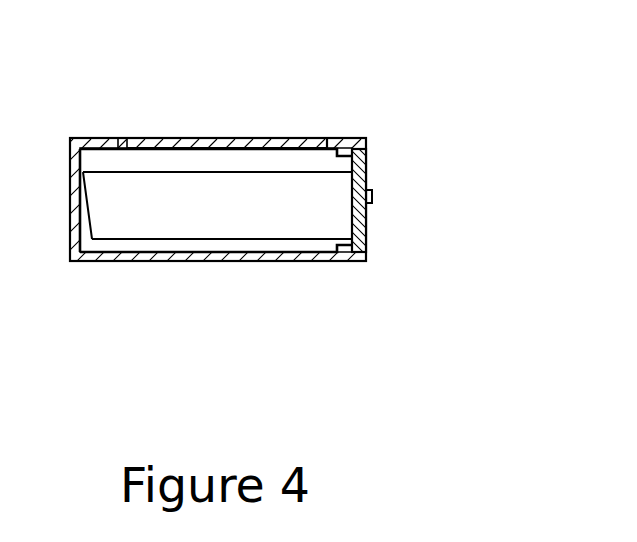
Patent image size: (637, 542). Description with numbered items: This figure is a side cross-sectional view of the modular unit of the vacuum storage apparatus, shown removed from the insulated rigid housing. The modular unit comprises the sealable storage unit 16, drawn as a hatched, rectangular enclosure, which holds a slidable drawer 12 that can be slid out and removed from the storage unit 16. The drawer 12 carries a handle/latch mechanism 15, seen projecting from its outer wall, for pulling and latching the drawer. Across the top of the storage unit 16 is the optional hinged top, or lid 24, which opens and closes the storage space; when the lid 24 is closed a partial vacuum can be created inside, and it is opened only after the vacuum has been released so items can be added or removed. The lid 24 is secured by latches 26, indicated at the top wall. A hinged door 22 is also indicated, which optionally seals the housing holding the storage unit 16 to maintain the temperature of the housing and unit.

The slidable drawer 12 is at (367, 157).
The handle/latch mechanism 15 is at (372, 196).
The storage unit 16 is at (206, 261).
The hinged door 22 is at (367, 232).
The hinged lid 24 is at (298, 138).
The latches 26 is at (118, 138).